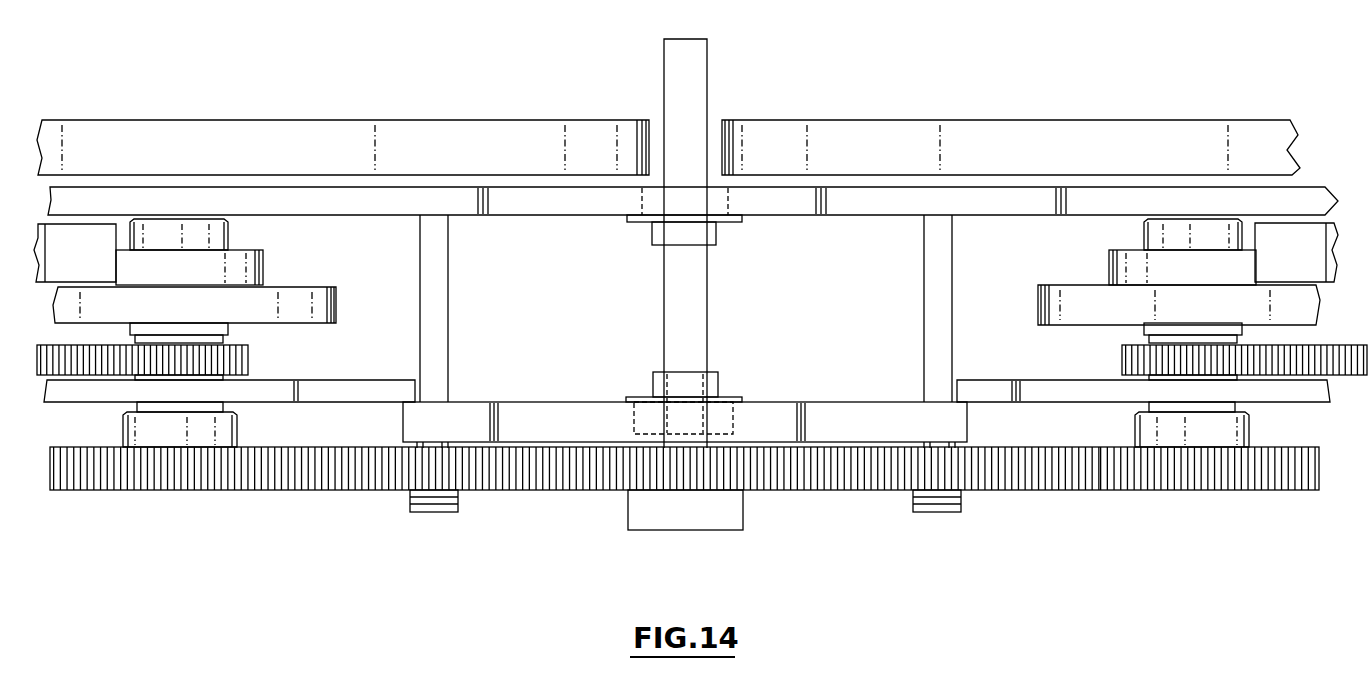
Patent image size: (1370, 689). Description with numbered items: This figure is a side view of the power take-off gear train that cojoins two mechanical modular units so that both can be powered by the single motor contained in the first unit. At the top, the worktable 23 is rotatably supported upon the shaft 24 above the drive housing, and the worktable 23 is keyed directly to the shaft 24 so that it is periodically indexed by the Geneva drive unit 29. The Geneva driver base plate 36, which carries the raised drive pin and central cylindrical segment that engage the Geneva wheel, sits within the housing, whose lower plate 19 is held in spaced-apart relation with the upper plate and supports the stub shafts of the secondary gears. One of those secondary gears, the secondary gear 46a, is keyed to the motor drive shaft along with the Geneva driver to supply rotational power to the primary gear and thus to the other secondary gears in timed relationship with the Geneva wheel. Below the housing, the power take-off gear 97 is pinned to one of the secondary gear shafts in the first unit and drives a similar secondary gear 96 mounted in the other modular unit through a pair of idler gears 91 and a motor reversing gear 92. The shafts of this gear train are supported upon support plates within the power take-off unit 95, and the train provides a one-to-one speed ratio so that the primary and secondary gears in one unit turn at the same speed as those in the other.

The lower plate 19 is at (1272, 402).
The worktable 23 is at (348, 118).
The shaft 24 is at (708, 68).
The Geneva drive unit 29 is at (96, 264).
The Geneva driver base plate 36 is at (292, 285).
The secondary gear 46a is at (248, 358).
The idler gears 91 is at (470, 491).
The motor reversing gear 92 is at (755, 491).
The power take-off unit 95 is at (345, 542).
The secondary gear 96 is at (1218, 490).
The power take-off gear 97 is at (183, 491).